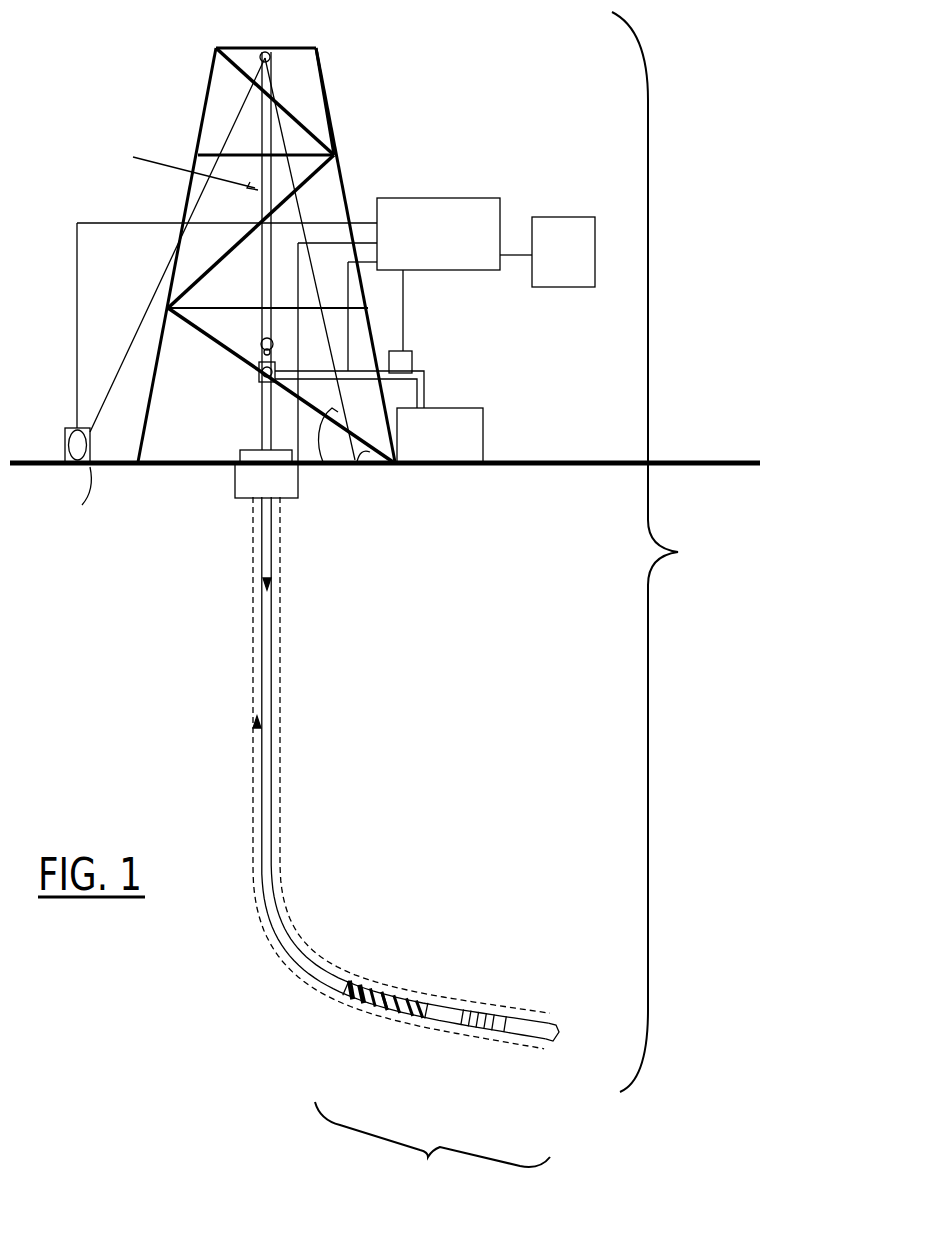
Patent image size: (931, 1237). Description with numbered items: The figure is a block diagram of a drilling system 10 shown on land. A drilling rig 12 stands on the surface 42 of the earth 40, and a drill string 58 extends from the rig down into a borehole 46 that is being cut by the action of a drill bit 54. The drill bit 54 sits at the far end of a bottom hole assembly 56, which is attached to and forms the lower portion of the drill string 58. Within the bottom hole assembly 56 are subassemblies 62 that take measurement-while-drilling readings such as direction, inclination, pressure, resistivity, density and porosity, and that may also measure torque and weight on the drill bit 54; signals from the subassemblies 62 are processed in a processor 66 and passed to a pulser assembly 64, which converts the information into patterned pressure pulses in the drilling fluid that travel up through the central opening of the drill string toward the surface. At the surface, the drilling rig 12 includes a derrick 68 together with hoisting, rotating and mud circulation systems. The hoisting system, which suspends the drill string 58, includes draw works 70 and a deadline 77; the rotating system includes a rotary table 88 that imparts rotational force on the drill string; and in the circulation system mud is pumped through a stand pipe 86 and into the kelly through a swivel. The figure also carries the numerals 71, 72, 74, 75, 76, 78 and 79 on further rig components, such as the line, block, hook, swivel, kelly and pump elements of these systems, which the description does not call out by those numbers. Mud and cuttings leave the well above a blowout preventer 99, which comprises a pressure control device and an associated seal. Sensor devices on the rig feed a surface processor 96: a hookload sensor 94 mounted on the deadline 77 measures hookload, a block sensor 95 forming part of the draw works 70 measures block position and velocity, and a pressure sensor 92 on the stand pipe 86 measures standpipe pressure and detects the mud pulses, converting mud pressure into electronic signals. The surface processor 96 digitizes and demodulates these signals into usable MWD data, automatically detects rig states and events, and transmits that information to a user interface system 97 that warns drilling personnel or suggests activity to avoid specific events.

The drilling system 10 is at (669, 552).
The drilling rig 12 is at (125, 100).
The earth 40 is at (433, 609).
The surface 42 is at (537, 467).
The borehole 46 is at (252, 605).
The drill bit 54 is at (556, 1031).
The bottom hole assembly 56 is at (432, 1151).
The drill string 58 is at (270, 606).
The subassemblies 62 is at (492, 1010).
The pulser assembly 64 is at (370, 1007).
The processor 66 is at (403, 997).
The derrick 68 is at (340, 156).
The draw works 70 is at (65, 428).
The drilling line 71 is at (135, 342).
The hook 72 is at (261, 344).
The swivel 74 is at (259, 376).
The crown block 75 is at (264, 50).
The kelly 76 is at (262, 425).
The deadline 77 is at (323, 467).
The mud pump 78 is at (456, 454).
The drill pipe 79 is at (177, 162).
The stand pipe 86 is at (424, 376).
The rotary table 88 is at (240, 457).
The pressure sensor 92 is at (405, 350).
The hookload sensor 94 is at (370, 467).
The block sensor 95 is at (71, 504).
The surface processor 96 is at (448, 248).
The user interface system 97 is at (574, 279).
The blowout preventer 99 is at (238, 495).